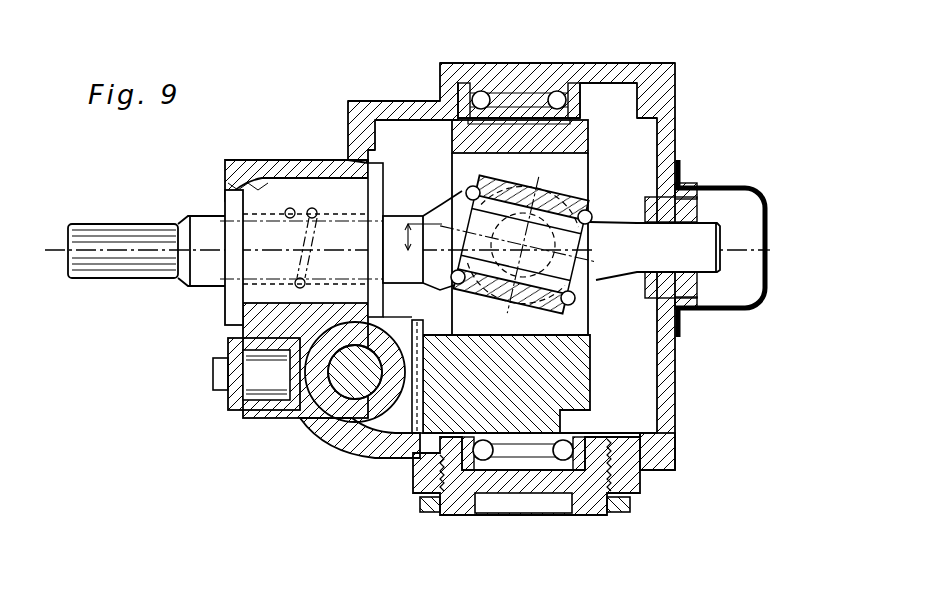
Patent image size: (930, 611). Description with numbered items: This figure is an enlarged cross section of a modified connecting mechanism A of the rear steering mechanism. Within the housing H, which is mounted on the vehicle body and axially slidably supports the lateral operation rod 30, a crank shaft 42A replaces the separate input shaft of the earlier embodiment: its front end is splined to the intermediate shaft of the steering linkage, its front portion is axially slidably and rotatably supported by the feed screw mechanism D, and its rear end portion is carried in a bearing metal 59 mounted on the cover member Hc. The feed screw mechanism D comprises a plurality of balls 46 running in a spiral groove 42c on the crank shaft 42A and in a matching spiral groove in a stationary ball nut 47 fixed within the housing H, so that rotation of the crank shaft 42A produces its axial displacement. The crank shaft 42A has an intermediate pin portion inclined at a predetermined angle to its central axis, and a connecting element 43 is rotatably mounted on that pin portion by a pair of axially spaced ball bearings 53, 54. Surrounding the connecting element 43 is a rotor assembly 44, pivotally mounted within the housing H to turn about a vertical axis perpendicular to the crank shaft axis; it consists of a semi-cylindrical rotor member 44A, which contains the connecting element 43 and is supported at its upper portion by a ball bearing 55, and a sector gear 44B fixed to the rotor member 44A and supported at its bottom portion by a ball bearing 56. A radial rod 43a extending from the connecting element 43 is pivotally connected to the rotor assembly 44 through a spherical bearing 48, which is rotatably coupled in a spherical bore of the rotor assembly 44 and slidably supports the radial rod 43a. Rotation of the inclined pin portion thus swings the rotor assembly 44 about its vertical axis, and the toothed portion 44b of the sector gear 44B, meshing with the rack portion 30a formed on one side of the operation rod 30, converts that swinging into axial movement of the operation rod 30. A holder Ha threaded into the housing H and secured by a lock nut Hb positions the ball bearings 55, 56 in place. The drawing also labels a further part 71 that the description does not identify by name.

The ball bearing 55 is at (563, 91).
The housing H is at (366, 100).
The connecting mechanism A is at (421, 133).
The stationary ball nut 47 is at (293, 178).
The feed screw mechanism D is at (306, 193).
The ball bearing 53 is at (468, 188).
The spherical bearing 48 is at (452, 199).
The semi-cylindrical rotor member 44A is at (576, 137).
The connecting element 43 is at (562, 200).
The ball bearing 54 is at (592, 215).
The bearing metal 59 is at (689, 188).
The balls 46 is at (297, 279).
The spiral groove 42c is at (312, 260).
The crank shaft 42A is at (207, 286).
The radial rod 43a is at (578, 293).
The rotor assembly 44 is at (572, 354).
The sector gear 44B is at (579, 369).
The cover member Hc is at (674, 405).
The operation rod 30 is at (330, 408).
The pivot pin 71 is at (352, 396).
The rack portion 30a is at (411, 412).
The toothed portion 44b is at (418, 414).
The ball bearing 56 is at (567, 443).
The lock nut Hb is at (632, 503).
The holder Ha is at (590, 510).